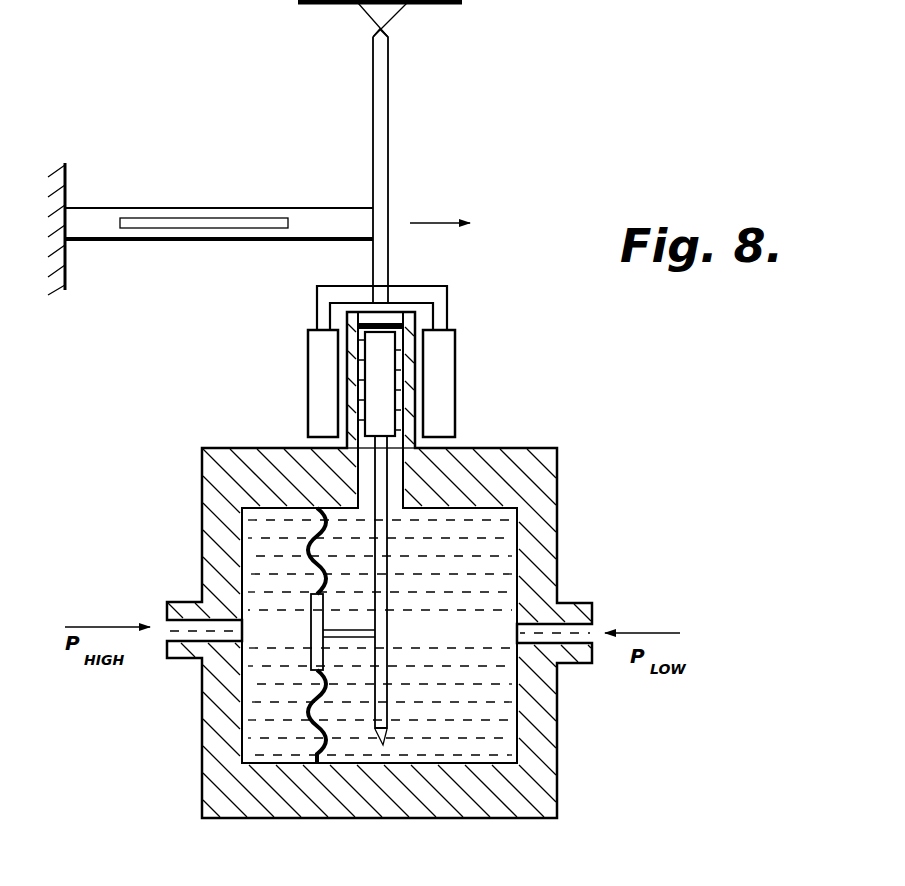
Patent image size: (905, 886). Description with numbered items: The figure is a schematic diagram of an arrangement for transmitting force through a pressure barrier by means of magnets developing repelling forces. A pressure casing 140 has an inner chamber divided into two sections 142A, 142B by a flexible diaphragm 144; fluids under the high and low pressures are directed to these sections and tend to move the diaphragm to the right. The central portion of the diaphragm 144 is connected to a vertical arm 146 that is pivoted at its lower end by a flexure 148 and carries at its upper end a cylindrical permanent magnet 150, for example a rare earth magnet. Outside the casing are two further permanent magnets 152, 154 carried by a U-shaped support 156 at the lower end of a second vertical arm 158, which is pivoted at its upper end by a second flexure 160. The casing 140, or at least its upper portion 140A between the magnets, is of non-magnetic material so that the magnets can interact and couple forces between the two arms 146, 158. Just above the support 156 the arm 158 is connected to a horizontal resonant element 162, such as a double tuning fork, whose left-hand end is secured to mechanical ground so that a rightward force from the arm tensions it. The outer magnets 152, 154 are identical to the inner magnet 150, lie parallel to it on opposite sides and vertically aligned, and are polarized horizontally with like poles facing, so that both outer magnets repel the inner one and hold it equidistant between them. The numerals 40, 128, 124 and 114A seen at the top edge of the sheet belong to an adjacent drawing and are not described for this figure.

The element (cut off from adjacent figure) 40 is at (503, 7).
The element (cut off from adjacent figure) 128 is at (576, 10).
The element (cut off from adjacent figure) 124 is at (621, 0).
The element (cut off from adjacent figure) 114A is at (703, 7).
The pressure casing 140 is at (540, 453).
The upper portion of the casing 140A is at (342, 317).
The chamber section 142A is at (245, 518).
The chamber section 142B is at (500, 548).
The flexible diaphragm 144 is at (310, 708).
The vertical arm 146 is at (383, 583).
The flexure 148 is at (383, 746).
The cylindrical permanent magnet 150 is at (385, 359).
The permanent magnet 152 is at (316, 358).
The permanent magnet 154 is at (447, 410).
The U-shaped support 156 is at (436, 288).
The second vertical arm 158 is at (385, 128).
The second flexure 160 is at (375, 12).
The horizontal resonant element 162 is at (100, 210).